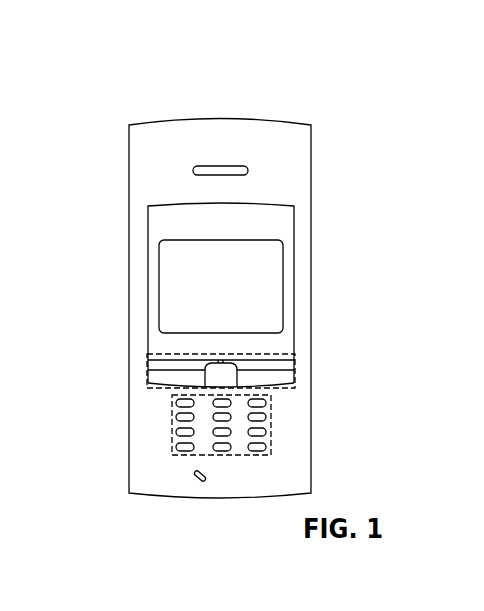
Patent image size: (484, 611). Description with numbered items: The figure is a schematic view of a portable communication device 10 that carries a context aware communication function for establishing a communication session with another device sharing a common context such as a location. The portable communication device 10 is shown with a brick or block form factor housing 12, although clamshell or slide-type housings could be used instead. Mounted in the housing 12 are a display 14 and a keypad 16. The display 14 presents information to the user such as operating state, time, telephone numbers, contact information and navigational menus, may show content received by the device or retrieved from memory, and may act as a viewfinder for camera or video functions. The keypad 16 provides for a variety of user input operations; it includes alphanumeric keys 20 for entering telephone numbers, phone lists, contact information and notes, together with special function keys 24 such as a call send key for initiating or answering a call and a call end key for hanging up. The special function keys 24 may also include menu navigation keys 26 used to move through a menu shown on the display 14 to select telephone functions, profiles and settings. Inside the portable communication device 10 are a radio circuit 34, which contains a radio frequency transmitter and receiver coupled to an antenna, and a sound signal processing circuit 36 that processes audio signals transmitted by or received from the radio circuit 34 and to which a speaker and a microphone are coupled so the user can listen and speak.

The portable communication device 10 is at (113, 79).
The housing 12 is at (129, 137).
The display 14 is at (221, 293).
The keypad 16 is at (159, 441).
The alphanumeric keys 20 is at (178, 396).
The special function keys 24 is at (288, 363).
The menu navigation keys 26 is at (228, 377).
The radio circuit 34 is at (220, 166).
The sound signal processing circuit 36 is at (205, 481).